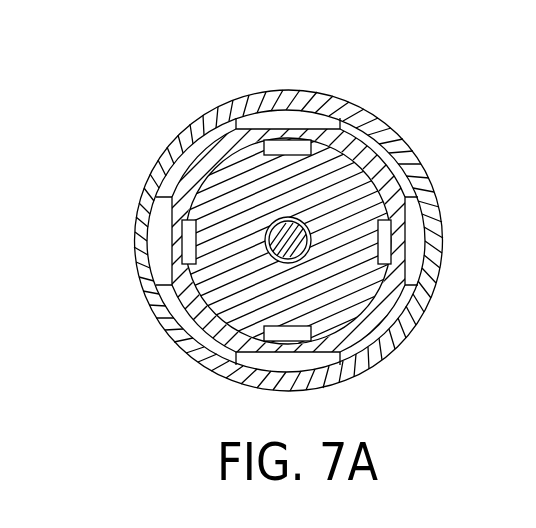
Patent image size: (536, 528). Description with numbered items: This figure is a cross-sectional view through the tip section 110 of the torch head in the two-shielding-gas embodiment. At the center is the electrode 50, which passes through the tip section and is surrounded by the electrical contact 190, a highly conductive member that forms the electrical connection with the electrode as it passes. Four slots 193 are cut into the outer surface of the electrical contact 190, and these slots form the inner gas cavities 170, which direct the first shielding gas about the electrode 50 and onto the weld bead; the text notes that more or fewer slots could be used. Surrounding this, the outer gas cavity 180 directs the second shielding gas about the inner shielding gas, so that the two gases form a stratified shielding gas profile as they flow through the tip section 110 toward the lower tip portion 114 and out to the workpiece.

The electrode 50 is at (276, 236).
The tip section 110 is at (158, 341).
The lower tip portion 114 is at (170, 147).
The inner gas cavity 170 is at (173, 255).
The outer gas cavity 180 is at (412, 268).
The electrical contact 190 is at (343, 180).
The slots 193 is at (288, 147).